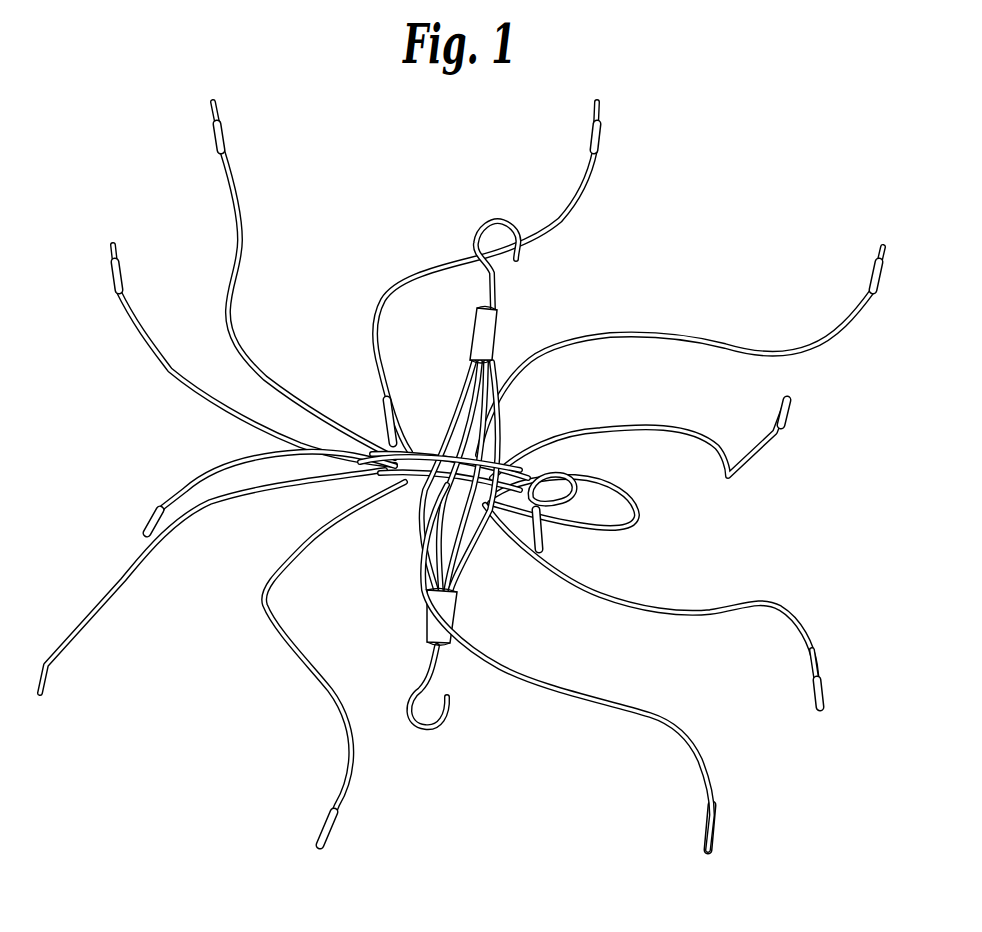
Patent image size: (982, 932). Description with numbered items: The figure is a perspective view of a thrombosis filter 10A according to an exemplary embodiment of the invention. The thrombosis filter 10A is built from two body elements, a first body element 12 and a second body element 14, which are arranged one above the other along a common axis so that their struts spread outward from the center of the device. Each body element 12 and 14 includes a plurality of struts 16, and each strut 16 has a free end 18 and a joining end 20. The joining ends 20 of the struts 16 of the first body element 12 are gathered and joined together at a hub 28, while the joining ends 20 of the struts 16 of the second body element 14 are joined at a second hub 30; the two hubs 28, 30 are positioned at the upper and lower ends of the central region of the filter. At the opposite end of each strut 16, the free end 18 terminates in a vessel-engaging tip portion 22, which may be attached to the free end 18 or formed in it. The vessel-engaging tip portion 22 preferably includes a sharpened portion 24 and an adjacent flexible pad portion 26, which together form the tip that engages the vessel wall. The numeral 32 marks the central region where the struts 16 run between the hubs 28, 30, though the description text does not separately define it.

The thrombosis filter 10A is at (470, 474).
The first body element 12 is at (573, 320).
The second body element 14 is at (439, 657).
The struts 16 is at (470, 476).
The free end 18 is at (697, 833).
The joining end 20 is at (455, 474).
The vessel-engaging tip portion 22 is at (692, 619).
The sharpened portion 24 is at (813, 670).
The flexible pad portion 26 is at (810, 683).
The hub 28 is at (472, 342).
The hub 30 is at (455, 612).
The central wires 32 is at (460, 430).